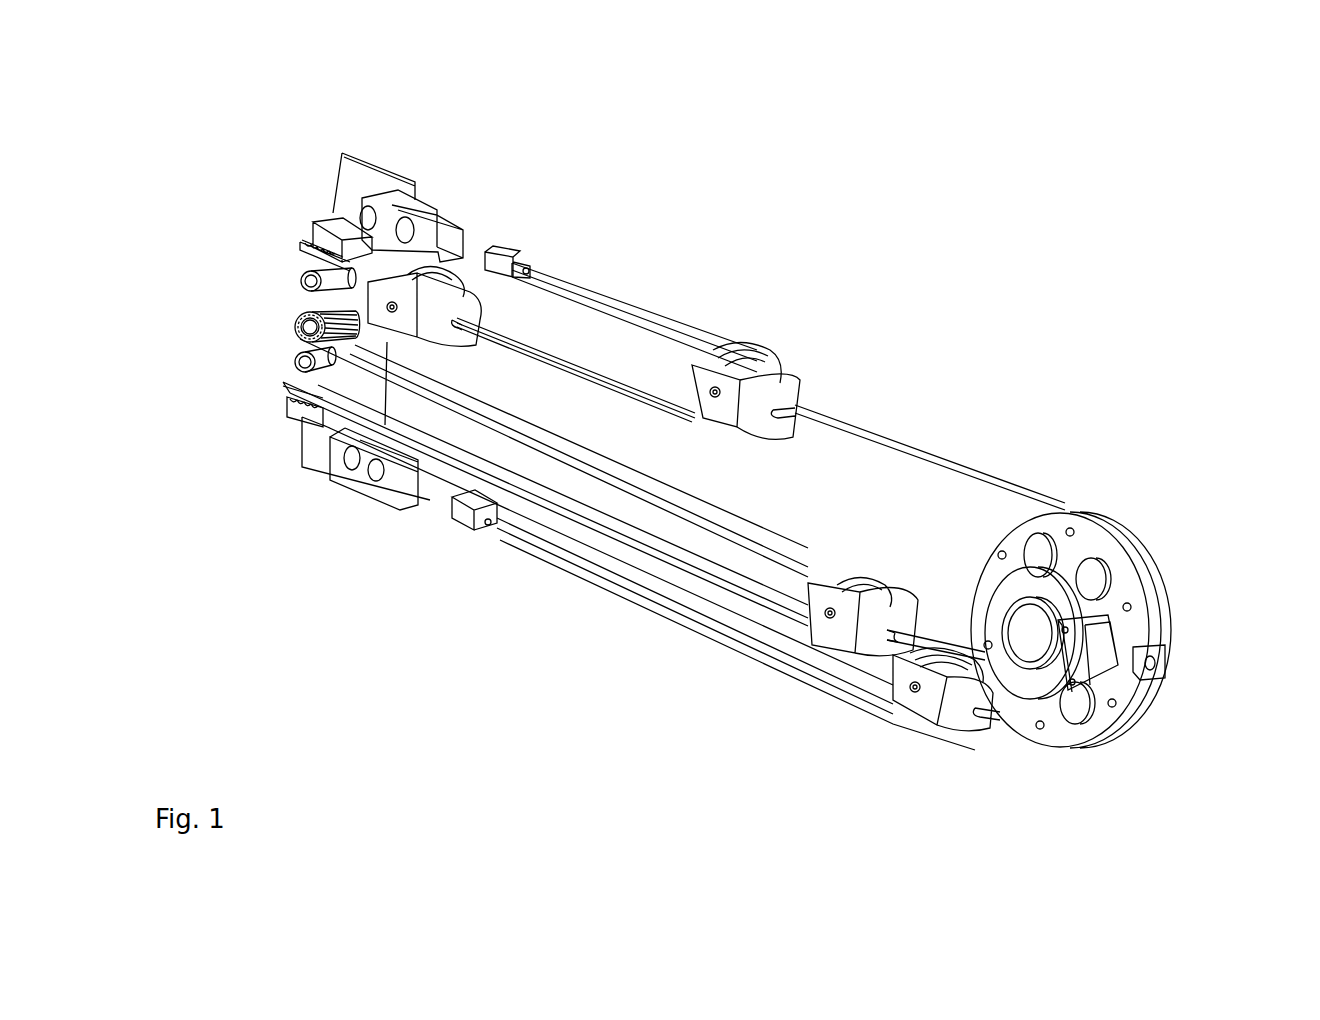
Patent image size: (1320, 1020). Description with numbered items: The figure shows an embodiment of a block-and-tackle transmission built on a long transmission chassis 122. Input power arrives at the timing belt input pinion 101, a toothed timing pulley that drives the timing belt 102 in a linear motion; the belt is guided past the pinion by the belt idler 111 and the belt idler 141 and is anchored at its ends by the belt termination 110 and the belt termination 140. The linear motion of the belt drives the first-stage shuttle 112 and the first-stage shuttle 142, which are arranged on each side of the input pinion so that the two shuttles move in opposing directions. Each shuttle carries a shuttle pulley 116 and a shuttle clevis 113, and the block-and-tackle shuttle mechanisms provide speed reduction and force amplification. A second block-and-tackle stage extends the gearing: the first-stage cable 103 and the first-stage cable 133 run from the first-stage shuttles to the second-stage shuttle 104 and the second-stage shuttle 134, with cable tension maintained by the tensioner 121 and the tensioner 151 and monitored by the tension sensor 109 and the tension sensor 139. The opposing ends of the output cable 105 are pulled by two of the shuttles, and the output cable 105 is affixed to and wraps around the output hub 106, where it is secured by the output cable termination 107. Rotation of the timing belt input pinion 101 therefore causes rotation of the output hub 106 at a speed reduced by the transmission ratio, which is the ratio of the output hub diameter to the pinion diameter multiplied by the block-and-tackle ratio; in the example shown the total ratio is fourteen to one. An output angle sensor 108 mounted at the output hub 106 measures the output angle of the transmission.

The timing belt input pinion 101 is at (298, 326).
The timing belt 102 is at (717, 538).
The stage-1 cable 103 is at (578, 280).
The stage-2 shuttle 104 is at (713, 368).
The output cable 105 is at (855, 420).
The output hub 106 is at (1083, 543).
The output cable termination 107 is at (1165, 648).
The output angle sensor 108 is at (1095, 680).
The tension sensor 109 is at (385, 222).
The belt termination 110 is at (313, 235).
The belt idler 111 is at (302, 281).
The stage-1 shuttle 112 is at (440, 327).
The shuttle clevis 113 is at (780, 402).
The shuttle pulley 116 is at (755, 350).
The tensioner 121 is at (528, 255).
The transmission chassis 122 is at (355, 185).
The stage-1 cable 133 is at (807, 673).
The stage-2 shuttle 134 is at (937, 690).
The tension sensor 139 is at (353, 468).
The belt termination 140 is at (292, 415).
The belt idler 141 is at (295, 370).
The stage-1 shuttle 142 is at (855, 605).
The tensioner 151 is at (462, 518).